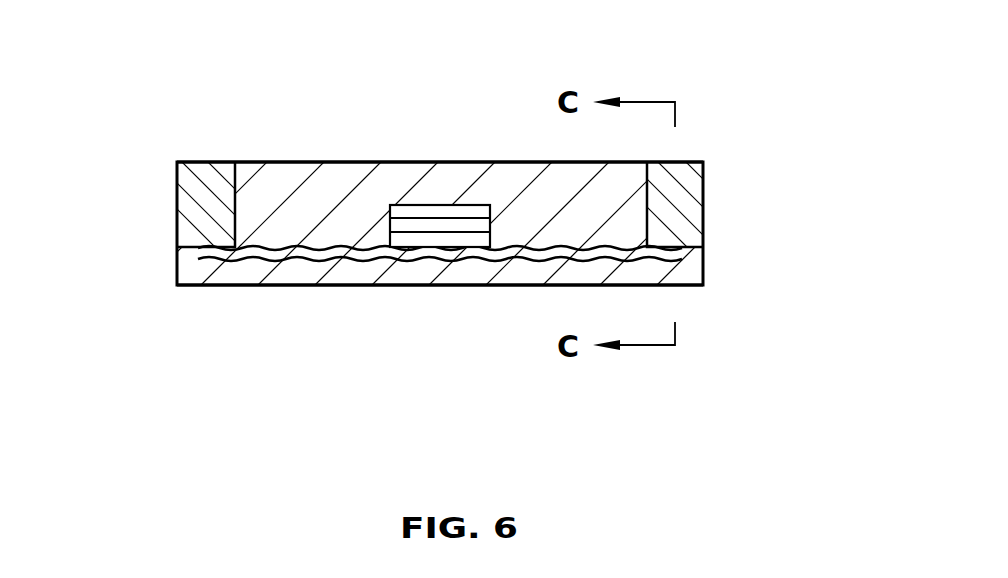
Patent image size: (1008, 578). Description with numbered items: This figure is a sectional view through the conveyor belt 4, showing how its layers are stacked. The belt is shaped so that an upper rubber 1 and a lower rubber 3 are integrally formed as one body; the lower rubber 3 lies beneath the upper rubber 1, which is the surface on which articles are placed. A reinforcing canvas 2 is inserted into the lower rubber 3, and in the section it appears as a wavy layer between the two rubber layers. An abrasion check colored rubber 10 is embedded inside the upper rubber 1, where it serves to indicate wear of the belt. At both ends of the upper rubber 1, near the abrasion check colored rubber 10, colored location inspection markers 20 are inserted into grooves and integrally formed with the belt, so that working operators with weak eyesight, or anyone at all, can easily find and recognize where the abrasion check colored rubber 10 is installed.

The upper rubber 1 is at (268, 224).
The reinforcing canvas 2 is at (403, 260).
The lower rubber 3 is at (288, 273).
The conveyor belt 4 is at (264, 108).
The abrasion check colored rubber 10 is at (458, 210).
The location inspection marker 20 is at (210, 185).